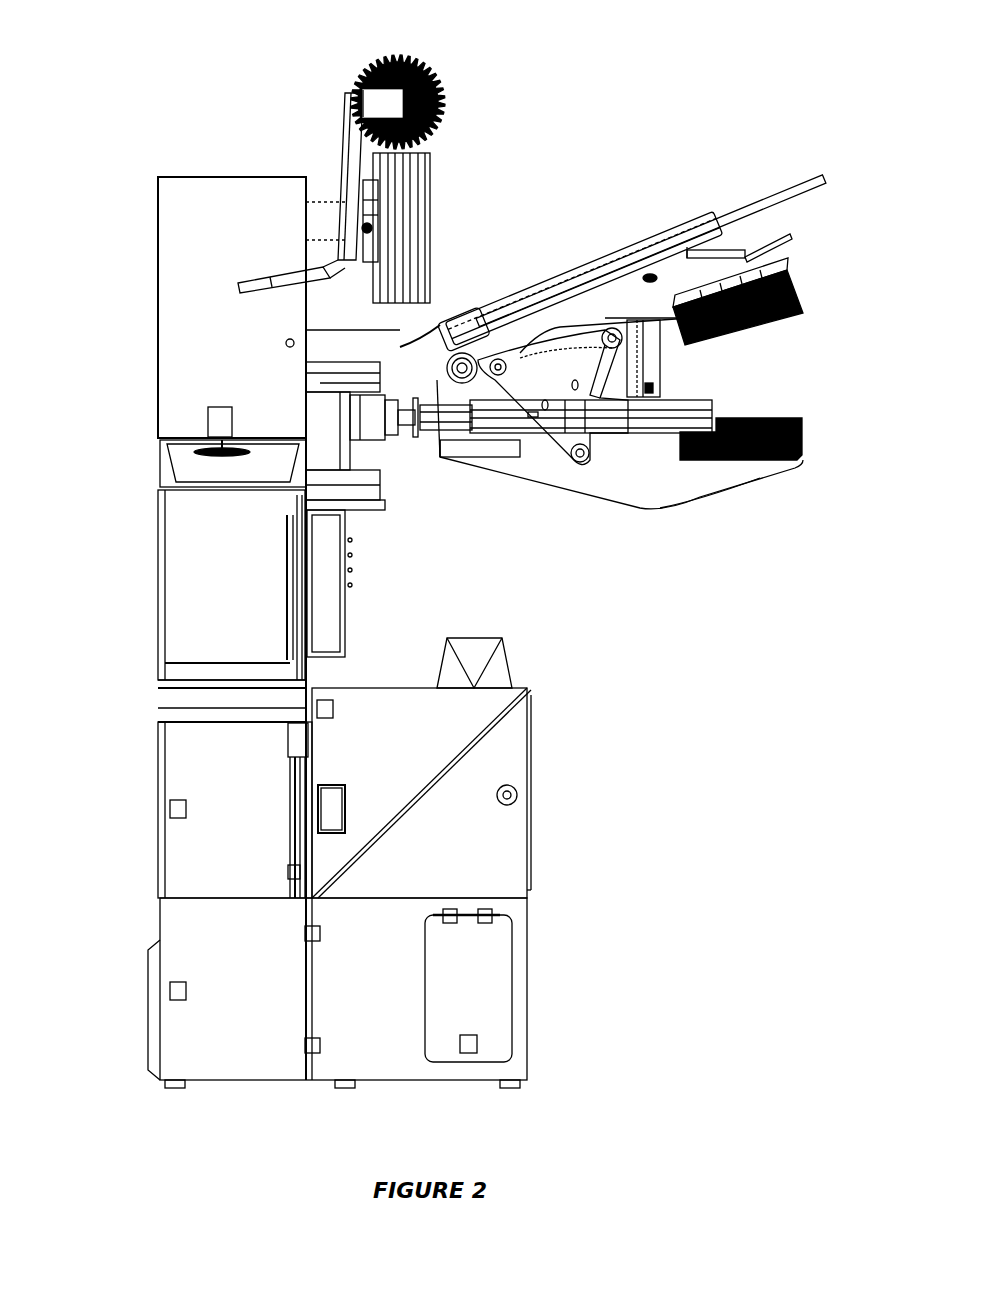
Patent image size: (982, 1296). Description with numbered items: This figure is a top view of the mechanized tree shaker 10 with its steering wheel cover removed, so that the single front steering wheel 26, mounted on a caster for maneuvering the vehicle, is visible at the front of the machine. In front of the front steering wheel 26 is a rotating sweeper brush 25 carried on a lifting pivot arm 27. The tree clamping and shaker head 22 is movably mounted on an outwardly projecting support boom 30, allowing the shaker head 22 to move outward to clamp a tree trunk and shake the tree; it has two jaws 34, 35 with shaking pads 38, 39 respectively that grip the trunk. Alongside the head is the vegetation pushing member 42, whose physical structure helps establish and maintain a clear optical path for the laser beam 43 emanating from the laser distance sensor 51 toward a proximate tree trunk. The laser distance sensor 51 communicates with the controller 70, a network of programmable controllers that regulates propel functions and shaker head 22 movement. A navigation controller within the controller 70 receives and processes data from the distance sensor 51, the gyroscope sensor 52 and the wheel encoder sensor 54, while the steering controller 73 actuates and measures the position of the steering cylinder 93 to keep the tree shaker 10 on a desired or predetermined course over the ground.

The tree shaker 10 is at (636, 698).
The tree clamping and shaker head 22 is at (690, 502).
The rotating sweeper brush 25 is at (432, 73).
The front steering wheel 26 is at (437, 188).
The lifting pivot arm 27 is at (345, 148).
The support boom 30 is at (650, 435).
The jaw 34 is at (742, 262).
The jaw 35 is at (750, 468).
The shaking pad 38 is at (755, 337).
The shaking pad 39 is at (766, 415).
The vegetation pushing member 42 is at (663, 222).
The laser beam 43 is at (797, 175).
The laser distance sensor 51 is at (407, 347).
The gyroscope sensor 52 is at (280, 343).
The wheel encoder sensor 54 is at (518, 800).
The controller 70 is at (353, 798).
The steering controller 73 is at (207, 418).
The steering cylinder 93 is at (267, 270).